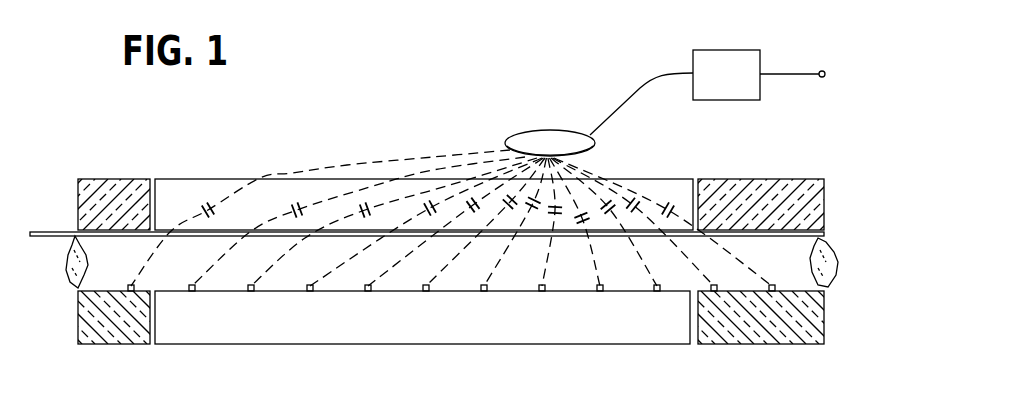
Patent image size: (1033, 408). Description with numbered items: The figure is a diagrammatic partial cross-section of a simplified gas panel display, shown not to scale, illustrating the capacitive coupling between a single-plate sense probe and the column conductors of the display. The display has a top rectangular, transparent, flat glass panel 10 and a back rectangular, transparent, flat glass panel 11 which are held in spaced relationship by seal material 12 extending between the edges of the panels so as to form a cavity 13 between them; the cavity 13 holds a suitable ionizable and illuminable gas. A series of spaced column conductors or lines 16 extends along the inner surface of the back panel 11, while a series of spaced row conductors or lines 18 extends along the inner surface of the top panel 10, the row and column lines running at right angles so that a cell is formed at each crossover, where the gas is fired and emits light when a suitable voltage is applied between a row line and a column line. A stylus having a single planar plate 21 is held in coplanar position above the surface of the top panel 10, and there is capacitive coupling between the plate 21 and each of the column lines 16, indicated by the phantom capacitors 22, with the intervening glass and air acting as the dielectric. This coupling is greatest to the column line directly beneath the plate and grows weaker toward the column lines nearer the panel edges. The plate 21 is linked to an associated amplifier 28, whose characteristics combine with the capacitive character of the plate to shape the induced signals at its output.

The top glass panel 10 is at (762, 180).
The back glass panel 11 is at (766, 337).
The seal material 12 is at (66, 276).
The cavity 13 is at (410, 274).
The column conductors 16 is at (252, 293).
The row conductors 18 is at (50, 231).
The planar plate 21 is at (526, 137).
The phantom capacitors 22 is at (210, 206).
The amplifier 28 is at (735, 50).